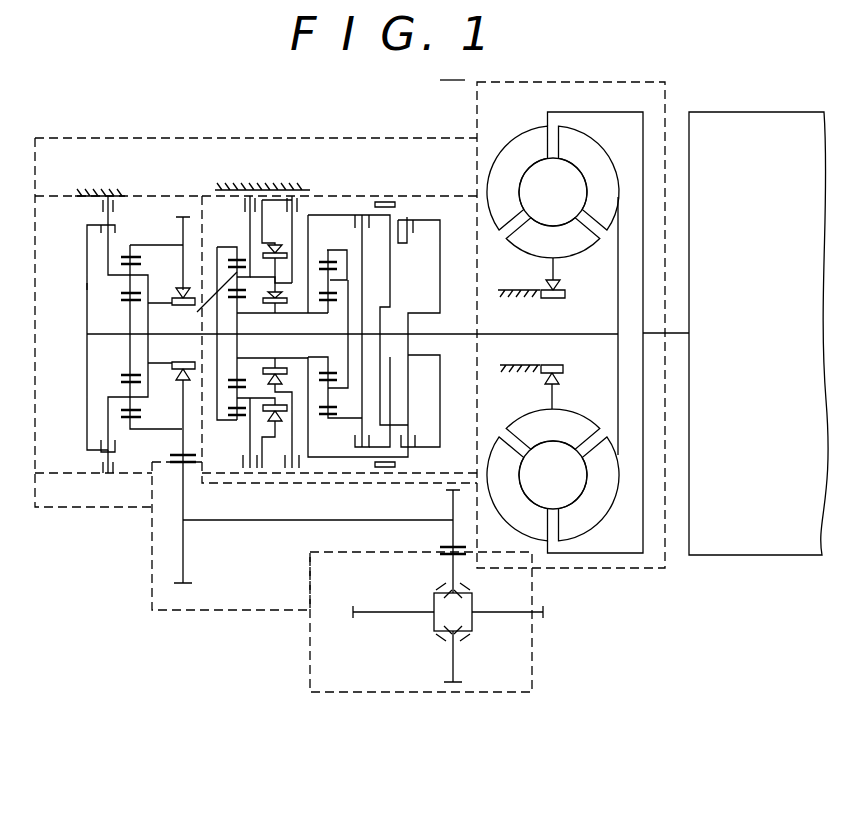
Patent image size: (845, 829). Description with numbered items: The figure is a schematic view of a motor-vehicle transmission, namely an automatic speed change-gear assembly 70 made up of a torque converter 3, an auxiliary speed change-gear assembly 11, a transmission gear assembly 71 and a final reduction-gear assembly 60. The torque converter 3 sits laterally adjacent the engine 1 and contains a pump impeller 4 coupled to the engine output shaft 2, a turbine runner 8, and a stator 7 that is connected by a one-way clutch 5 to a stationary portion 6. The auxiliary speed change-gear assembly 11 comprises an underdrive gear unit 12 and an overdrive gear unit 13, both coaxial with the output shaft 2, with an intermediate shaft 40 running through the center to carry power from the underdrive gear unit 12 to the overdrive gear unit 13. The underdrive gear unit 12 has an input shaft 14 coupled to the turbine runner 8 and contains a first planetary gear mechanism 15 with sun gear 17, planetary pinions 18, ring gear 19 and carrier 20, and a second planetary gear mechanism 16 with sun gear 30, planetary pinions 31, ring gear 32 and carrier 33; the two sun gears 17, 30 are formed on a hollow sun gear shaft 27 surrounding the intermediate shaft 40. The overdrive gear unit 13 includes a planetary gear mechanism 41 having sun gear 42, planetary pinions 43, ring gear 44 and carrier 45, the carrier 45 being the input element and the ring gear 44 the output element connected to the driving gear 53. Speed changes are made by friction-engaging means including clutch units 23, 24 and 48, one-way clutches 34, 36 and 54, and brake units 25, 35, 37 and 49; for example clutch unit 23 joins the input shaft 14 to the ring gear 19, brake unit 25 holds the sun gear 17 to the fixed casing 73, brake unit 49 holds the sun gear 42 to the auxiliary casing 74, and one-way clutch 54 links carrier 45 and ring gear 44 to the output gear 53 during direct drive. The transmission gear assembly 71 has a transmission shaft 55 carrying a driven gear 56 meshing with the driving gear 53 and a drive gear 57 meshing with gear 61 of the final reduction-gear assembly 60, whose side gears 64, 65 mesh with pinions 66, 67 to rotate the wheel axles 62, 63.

The engine 1 is at (758, 112).
The output shaft 2 is at (676, 333).
The torque converter 3 is at (588, 82).
The pump impeller 4 is at (562, 332).
The one-way clutch 5 is at (566, 295).
The stationary portion 6 is at (512, 291).
The stator 7 is at (552, 236).
The turbine runner 8 is at (600, 150).
The auxiliary speed change-gear assembly 11 is at (262, 138).
The underdrive gear unit 12 is at (440, 196).
The overdrive gear unit 13 is at (188, 194).
The input shaft 14 is at (452, 333).
The first planetary gear mechanism 15 is at (343, 256).
The second planetary gear mechanism 16 is at (240, 240).
The sun gear 17 is at (335, 334).
The planetary pinions 18 is at (360, 272).
The ring gear 19 is at (332, 258).
The carrier 20 is at (350, 312).
The clutch unit 23 is at (370, 228).
The clutch unit 24 is at (410, 226).
The brake unit 25 is at (396, 206).
The sun gear shaft 27 is at (272, 401).
The sun gear 30 is at (233, 366).
The planetary pinions 31 is at (204, 302).
The ring gear 32 is at (233, 248).
The carrier 33 is at (240, 300).
The one-way clutch 34 is at (284, 298).
The brake unit 35 is at (304, 197).
The one-way clutch 36 is at (272, 244).
The brake unit 37 is at (243, 200).
The intermediate shaft 40 is at (165, 336).
The planetary gear mechanism 41 is at (126, 446).
The sun gear 42 is at (128, 326).
The planetary pinions 43 is at (125, 292).
The ring gear 44 is at (130, 252).
The carrier 45 is at (87, 284).
The clutch unit 48 is at (87, 226).
The brake unit 49 is at (76, 197).
The driving gear 53 is at (180, 234).
The one-way clutch 54 is at (179, 294).
The transmission shaft 55 is at (276, 520).
The driven gear 56 is at (184, 544).
The drive gear 57 is at (450, 504).
The final reduction-gear assembly 60 is at (534, 664).
The gear 61 is at (452, 573).
The wheel axle 62 is at (374, 611).
The wheel axle 63 is at (506, 613).
The side gear 64 is at (430, 620).
The side gear 65 is at (480, 600).
The pinion 66 is at (453, 612).
The pinion 67 is at (458, 637).
The automatic speed change-gear assembly 70 is at (452, 69).
The transmission gear assembly 71 is at (226, 610).
The fixed casing 73 is at (268, 190).
The auxiliary casing 74 is at (106, 192).